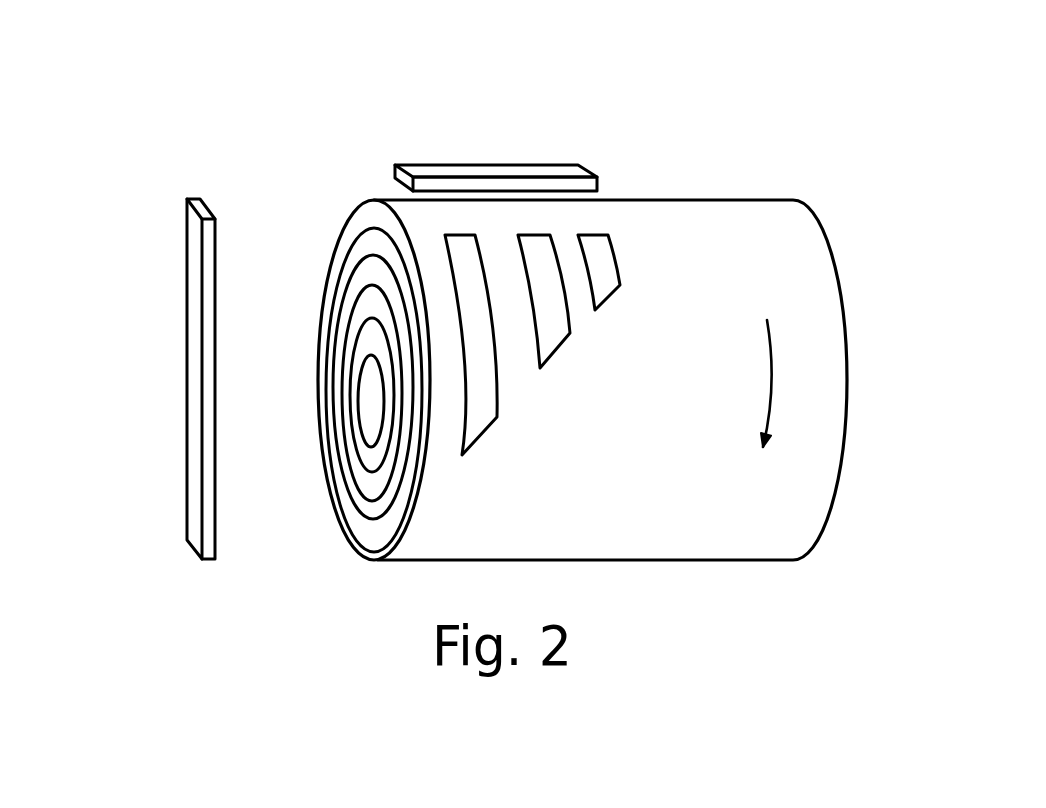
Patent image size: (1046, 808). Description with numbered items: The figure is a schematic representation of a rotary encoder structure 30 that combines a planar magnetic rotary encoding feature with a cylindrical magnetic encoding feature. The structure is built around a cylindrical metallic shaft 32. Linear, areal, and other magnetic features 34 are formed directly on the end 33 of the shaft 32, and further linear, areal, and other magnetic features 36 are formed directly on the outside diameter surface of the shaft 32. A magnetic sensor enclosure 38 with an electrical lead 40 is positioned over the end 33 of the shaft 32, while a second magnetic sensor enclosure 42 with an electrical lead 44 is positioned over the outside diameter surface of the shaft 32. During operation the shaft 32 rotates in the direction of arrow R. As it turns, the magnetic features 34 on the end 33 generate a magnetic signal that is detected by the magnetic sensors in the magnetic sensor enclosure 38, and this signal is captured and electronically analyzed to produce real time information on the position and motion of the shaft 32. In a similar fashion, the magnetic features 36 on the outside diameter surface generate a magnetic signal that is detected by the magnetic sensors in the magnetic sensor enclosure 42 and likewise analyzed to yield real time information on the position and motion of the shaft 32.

The rotary encoder structure 30 is at (853, 97).
The cylindrical shaft 32 is at (795, 477).
The end 33 is at (365, 530).
The magnetic features 34 is at (348, 250).
The magnetic features 36 is at (533, 285).
The magnetic sensor enclosure 38 is at (198, 472).
The electrical lead 40 is at (195, 523).
The magnetic sensor enclosure 42 is at (462, 170).
The electrical lead 44 is at (575, 82).
The arrow R is at (773, 355).